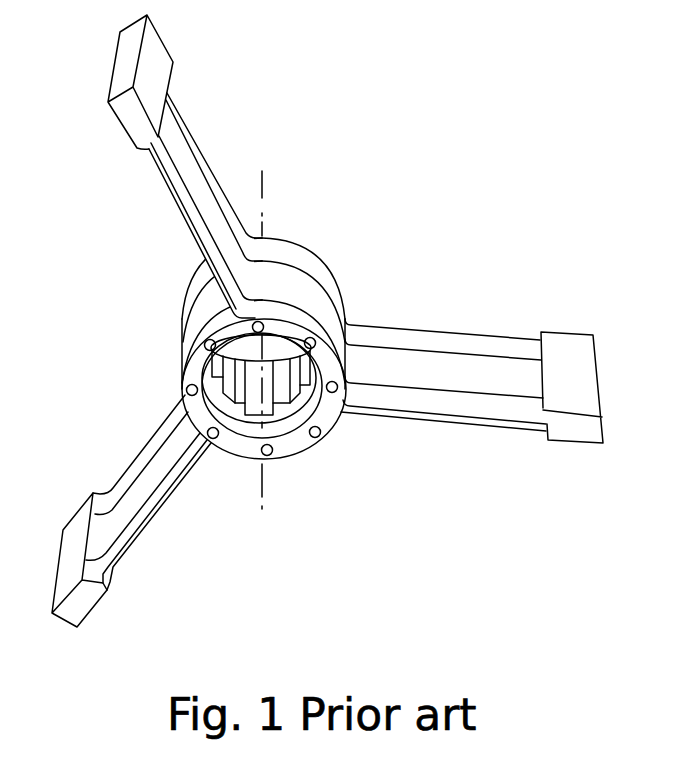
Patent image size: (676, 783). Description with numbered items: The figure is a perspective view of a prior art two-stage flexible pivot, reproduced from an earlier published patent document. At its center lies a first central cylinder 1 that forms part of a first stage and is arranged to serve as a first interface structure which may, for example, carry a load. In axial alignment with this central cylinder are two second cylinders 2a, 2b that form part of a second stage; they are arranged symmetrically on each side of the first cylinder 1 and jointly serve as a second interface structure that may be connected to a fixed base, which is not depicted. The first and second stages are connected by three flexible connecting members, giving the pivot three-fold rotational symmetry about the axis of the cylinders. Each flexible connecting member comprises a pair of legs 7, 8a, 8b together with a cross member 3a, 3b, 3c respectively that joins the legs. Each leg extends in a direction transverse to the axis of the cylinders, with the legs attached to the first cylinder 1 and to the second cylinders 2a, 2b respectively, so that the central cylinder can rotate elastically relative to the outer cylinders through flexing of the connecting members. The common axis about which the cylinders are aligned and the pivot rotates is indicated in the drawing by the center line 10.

The first central cylinder 1 is at (295, 286).
The second cylinder 2a is at (318, 331).
The second cylinder 2b is at (257, 252).
The cross member 3a is at (560, 350).
The cross member 3b is at (140, 117).
The cross member 3c is at (78, 605).
The leg 7 is at (443, 371).
The leg 8a is at (470, 408).
The leg 8b is at (415, 344).
The axis of rotation 10 is at (262, 478).